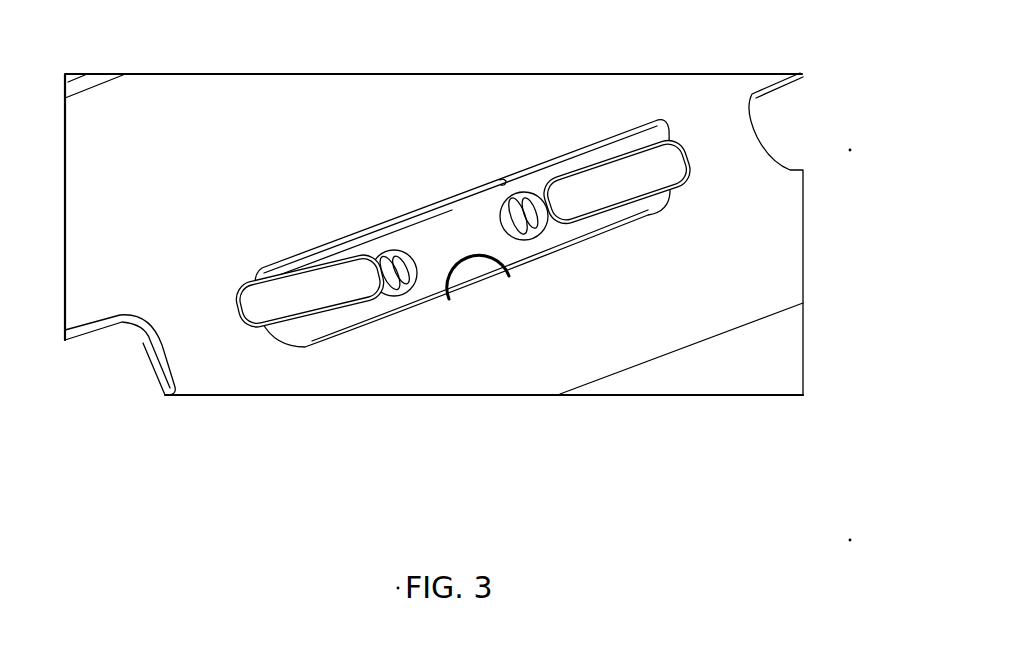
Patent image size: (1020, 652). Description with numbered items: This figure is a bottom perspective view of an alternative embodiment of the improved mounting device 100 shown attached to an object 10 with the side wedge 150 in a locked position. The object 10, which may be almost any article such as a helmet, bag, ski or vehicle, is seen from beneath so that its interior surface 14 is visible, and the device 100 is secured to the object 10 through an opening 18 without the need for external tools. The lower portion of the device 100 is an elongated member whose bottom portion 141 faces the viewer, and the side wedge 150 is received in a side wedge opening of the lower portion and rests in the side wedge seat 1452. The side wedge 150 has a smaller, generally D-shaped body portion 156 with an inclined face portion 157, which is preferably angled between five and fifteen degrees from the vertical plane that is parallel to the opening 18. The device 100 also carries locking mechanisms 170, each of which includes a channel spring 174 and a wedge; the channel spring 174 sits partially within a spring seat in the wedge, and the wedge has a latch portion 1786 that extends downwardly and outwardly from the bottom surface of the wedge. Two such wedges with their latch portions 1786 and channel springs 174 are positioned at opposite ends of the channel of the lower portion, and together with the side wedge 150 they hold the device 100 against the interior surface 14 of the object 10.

The object 10 is at (708, 73).
The interior surface 14 is at (746, 203).
The opening 18 is at (503, 182).
The improved mounting device 100 is at (467, 271).
The bottom portion 141 is at (418, 240).
The side wedge 150 is at (482, 281).
The body portion 156 is at (465, 270).
The inclined face portion 157 is at (492, 283).
The locking mechanism 170 is at (148, 370).
The channel spring 174 is at (406, 295).
The side wedge seat 1452 is at (454, 228).
The latch portion 1786 is at (297, 296).